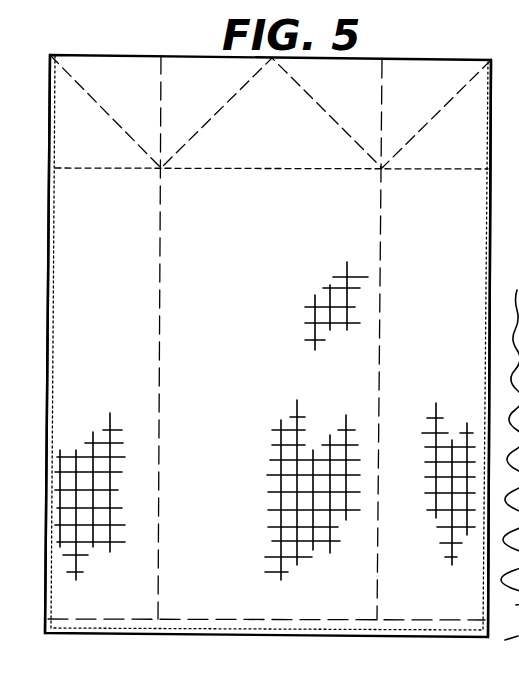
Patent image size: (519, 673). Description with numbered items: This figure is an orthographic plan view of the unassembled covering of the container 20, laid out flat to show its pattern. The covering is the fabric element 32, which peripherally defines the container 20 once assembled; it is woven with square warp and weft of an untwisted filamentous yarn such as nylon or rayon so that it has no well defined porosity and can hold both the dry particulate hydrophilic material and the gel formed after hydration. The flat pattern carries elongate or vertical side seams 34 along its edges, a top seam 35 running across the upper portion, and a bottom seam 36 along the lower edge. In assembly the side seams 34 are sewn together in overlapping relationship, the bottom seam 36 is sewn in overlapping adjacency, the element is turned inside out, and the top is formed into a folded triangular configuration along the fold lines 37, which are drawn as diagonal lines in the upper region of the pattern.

The container 20 is at (458, 55).
The fabric element 32 is at (143, 98).
The side seams 34 is at (50, 268).
The top seam 35 is at (357, 174).
The bottom seam 36 is at (257, 621).
The fold lines 37 is at (295, 84).